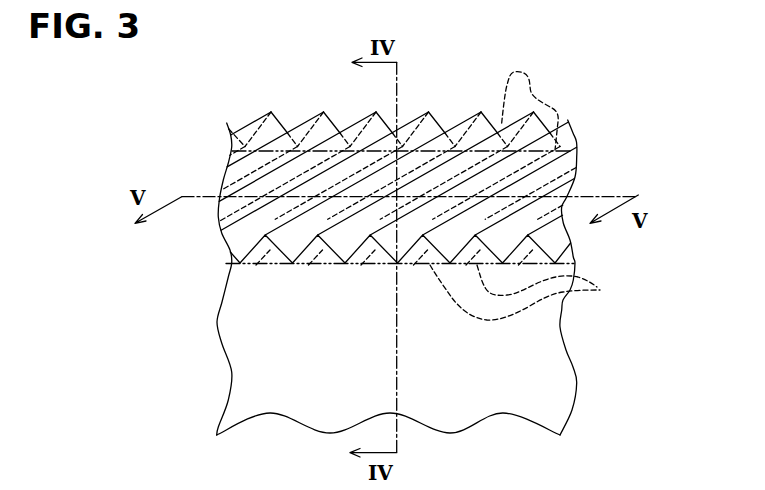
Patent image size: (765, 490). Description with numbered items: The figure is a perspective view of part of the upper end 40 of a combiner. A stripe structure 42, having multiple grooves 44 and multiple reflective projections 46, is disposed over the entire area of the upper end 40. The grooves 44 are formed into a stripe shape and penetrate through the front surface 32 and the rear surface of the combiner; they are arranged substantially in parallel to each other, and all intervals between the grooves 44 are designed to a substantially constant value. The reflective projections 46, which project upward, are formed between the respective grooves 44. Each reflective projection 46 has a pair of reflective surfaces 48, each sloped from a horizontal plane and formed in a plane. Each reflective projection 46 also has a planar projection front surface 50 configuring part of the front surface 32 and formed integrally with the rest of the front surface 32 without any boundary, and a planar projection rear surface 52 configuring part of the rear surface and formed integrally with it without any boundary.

The front surface 32 is at (363, 358).
The upper end 40 is at (431, 183).
The stripe structure 42 is at (431, 183).
The groove 44 is at (531, 292).
The reflective projection 46 is at (258, 178).
The reflective surface 48 is at (297, 152).
The projection front surface 50 is at (317, 265).
The projection rear surface 52 is at (530, 98).